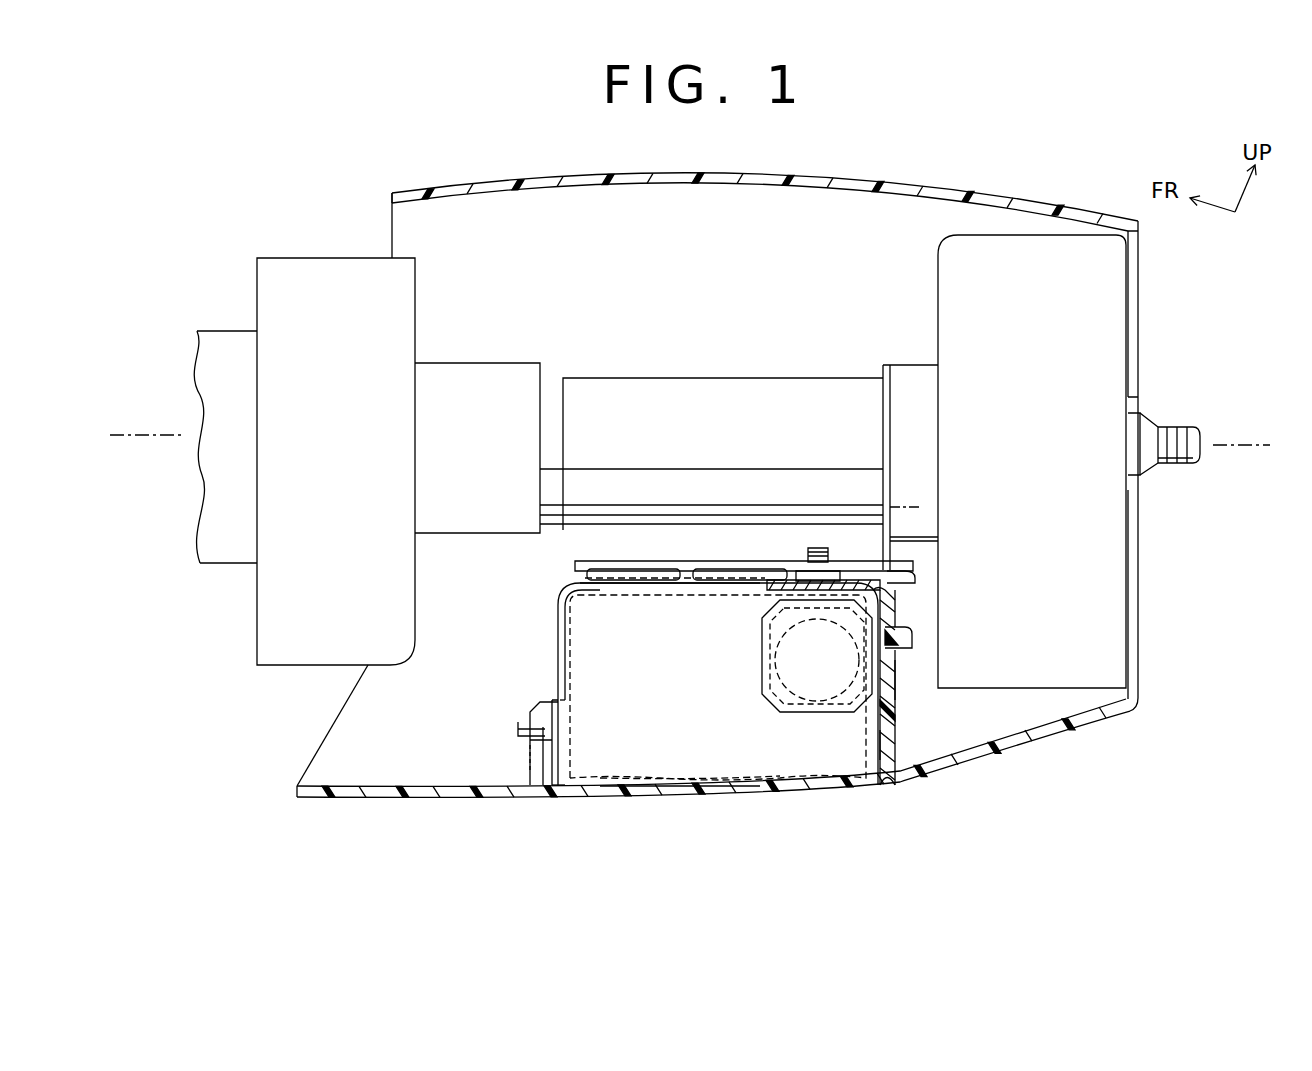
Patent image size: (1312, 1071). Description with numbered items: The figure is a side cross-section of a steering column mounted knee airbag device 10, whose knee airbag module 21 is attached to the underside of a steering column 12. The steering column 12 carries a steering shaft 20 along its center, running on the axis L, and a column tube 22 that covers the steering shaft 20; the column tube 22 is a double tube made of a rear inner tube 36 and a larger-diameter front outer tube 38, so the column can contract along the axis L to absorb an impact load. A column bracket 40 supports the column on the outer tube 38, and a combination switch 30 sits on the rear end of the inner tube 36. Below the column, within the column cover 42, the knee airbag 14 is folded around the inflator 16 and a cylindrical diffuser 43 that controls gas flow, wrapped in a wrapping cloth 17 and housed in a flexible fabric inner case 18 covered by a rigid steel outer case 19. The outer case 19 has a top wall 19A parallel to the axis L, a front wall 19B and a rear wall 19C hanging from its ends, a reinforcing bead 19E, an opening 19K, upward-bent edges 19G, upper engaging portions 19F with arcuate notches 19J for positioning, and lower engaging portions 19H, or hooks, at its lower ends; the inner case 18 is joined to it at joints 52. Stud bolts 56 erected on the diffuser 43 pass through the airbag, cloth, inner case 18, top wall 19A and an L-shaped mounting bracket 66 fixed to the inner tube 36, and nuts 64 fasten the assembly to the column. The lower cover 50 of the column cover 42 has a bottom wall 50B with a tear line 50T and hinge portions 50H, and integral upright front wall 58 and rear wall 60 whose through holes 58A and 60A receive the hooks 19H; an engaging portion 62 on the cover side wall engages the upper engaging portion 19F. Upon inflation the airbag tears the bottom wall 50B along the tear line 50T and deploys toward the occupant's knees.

The knee airbag device 10 is at (1150, 770).
The steering column 12 is at (742, 298).
The knee airbag 14 is at (785, 750).
The inflator 16 is at (765, 640).
The wrapping cloth 17 is at (870, 740).
The inner case 18 is at (895, 740).
The outer case 19 is at (555, 590).
The top wall 19A is at (740, 575).
The front wall 19B is at (555, 608).
The rear wall 19C is at (905, 595).
The reinforcing bead 19E is at (790, 575).
The upper engaging portion 19F is at (665, 575).
The edge 19G is at (615, 575).
The lower engaging portion 19H is at (912, 633).
The arcuate notch 19J is at (700, 575).
The opening 19K is at (625, 582).
The steering shaft 20 is at (1180, 430).
The knee airbag module 21 is at (485, 690).
The column tube 22 is at (474, 238).
The combination switch 30 is at (940, 268).
The inner tube 36 is at (610, 377).
The outer tube 38 is at (510, 363).
The column bracket 40 is at (285, 666).
The column cover 42 is at (860, 172).
The diffuser 43 is at (762, 650).
The lower cover 50 is at (1035, 760).
The bottom wall 50B is at (660, 797).
The hinge portion 50H is at (893, 780).
The tear line 50T is at (722, 785).
The joint 52 is at (555, 685).
The stud bolt 56 is at (845, 570).
The front wall 58 is at (540, 705).
The through hole 58A is at (530, 745).
The rear wall 60 is at (910, 713).
The through hole 60A is at (895, 675).
The engaging portion 62 is at (648, 560).
The nut 64 is at (815, 548).
The mounting bracket 66 is at (865, 580).
The axis L is at (1230, 445).